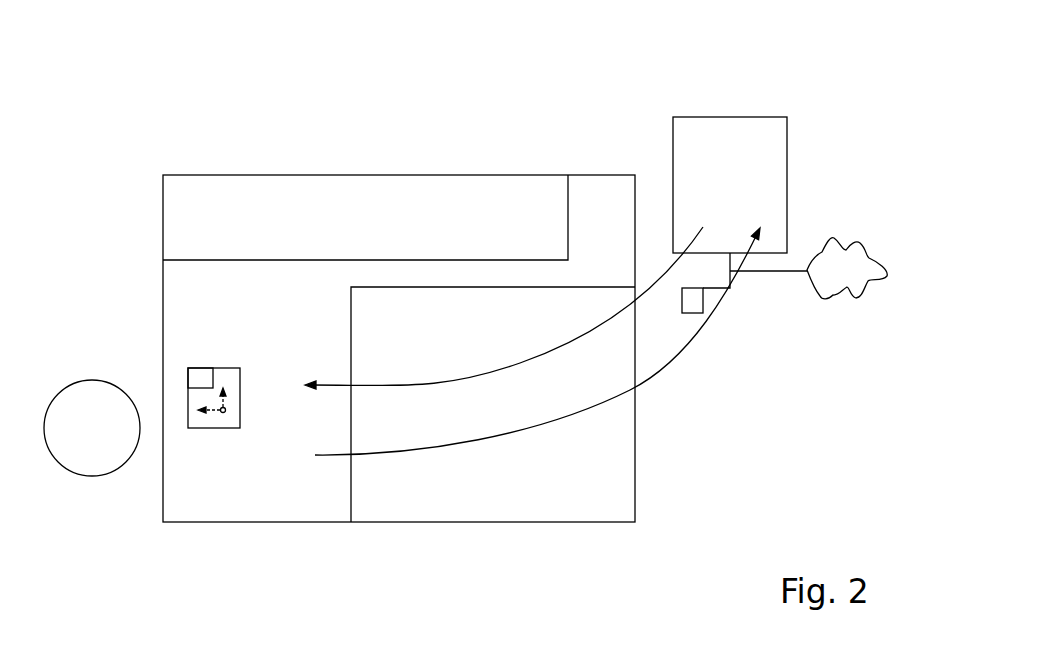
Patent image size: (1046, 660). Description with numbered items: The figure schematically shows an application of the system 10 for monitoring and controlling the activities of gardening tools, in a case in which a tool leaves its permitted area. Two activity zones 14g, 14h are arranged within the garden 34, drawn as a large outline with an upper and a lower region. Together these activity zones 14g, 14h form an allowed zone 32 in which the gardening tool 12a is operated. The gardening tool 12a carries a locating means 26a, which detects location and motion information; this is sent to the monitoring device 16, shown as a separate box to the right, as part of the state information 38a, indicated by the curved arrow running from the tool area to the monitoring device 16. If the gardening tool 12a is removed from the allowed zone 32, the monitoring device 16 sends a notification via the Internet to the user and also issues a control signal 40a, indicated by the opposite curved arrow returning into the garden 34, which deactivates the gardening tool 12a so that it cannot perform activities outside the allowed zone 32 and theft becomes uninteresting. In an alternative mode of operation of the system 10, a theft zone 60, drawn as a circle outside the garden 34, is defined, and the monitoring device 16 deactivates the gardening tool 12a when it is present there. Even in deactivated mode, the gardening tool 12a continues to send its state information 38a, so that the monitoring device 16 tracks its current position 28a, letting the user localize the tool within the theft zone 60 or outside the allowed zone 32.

The system 10 is at (780, 179).
The monitoring device 16 is at (787, 172).
The garden 34 is at (163, 313).
The activity zone 14g is at (570, 213).
The activity zone 14h is at (352, 507).
The allowed zone 32 is at (397, 305).
The control signal 40a is at (653, 293).
The state information 38a is at (683, 357).
The gardening tool 12a is at (212, 428).
The locating means 26a is at (200, 378).
The current position 28a is at (224, 415).
The theft zone 60 is at (85, 477).